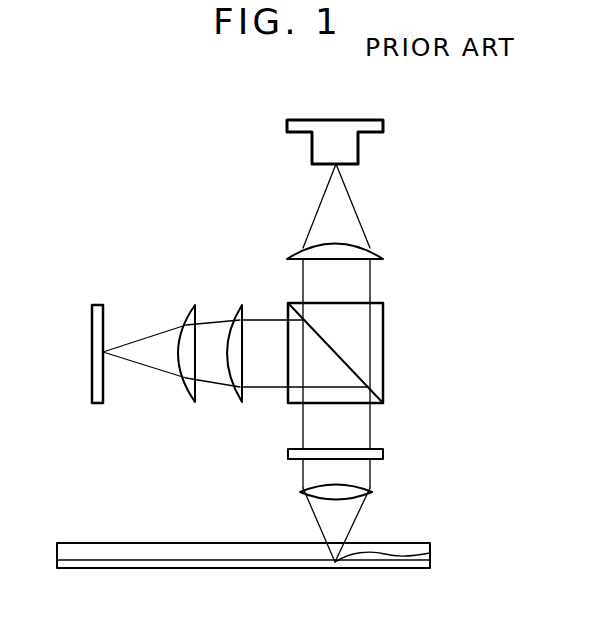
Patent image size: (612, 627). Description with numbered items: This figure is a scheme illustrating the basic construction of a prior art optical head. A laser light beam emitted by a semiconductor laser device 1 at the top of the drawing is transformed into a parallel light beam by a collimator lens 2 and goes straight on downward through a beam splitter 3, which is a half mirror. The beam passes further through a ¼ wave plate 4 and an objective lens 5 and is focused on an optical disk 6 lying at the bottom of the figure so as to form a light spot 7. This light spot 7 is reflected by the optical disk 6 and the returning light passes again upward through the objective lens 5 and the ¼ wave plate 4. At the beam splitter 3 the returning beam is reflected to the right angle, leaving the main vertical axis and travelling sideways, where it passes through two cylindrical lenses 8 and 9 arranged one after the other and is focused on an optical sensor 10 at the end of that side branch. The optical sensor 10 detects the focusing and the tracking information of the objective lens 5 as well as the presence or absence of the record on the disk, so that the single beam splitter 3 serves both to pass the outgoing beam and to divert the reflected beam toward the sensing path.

The semiconductor laser device 1 is at (357, 120).
The collimator lens 2 is at (370, 248).
The beam splitter 3 is at (385, 348).
The ¼ wave plate 4 is at (385, 453).
The objective lens 5 is at (372, 490).
The optical disk 6 is at (113, 543).
The light spot 7 is at (431, 556).
The cylindrical lens 8 is at (236, 310).
The cylindrical lens 9 is at (183, 310).
The optical sensor 10 is at (97, 305).